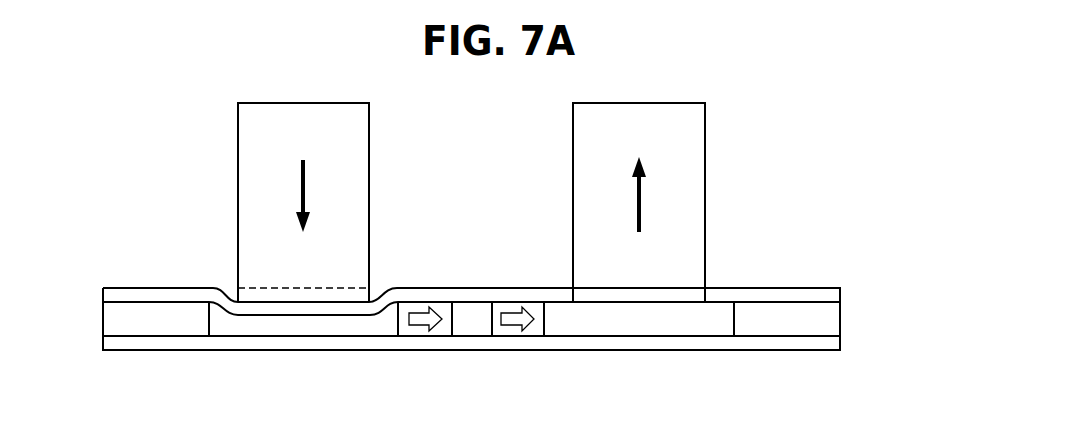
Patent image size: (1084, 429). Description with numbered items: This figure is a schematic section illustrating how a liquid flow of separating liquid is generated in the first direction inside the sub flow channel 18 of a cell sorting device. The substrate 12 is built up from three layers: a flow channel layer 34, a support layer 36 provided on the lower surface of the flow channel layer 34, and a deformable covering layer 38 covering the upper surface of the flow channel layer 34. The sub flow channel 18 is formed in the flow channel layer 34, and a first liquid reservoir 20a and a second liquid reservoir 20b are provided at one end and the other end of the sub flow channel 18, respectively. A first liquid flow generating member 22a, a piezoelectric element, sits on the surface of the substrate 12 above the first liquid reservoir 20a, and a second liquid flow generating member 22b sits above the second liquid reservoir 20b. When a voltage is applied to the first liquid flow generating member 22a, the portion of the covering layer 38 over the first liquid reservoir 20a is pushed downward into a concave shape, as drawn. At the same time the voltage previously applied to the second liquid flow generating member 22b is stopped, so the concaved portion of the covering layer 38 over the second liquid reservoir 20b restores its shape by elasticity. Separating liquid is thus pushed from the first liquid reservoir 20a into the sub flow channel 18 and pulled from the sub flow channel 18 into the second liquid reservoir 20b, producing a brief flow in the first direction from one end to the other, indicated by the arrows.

The substrate 12 is at (771, 287).
The sub flow channel 18 is at (472, 323).
The first liquid reservoir 20a is at (305, 325).
The second liquid reservoir 20b is at (638, 323).
The first liquid flow generating member 22a is at (250, 196).
The second liquid flow generating member 22b is at (701, 196).
The flow channel layer 34 is at (830, 318).
The support layer 36 is at (150, 345).
The covering layer 38 is at (148, 295).